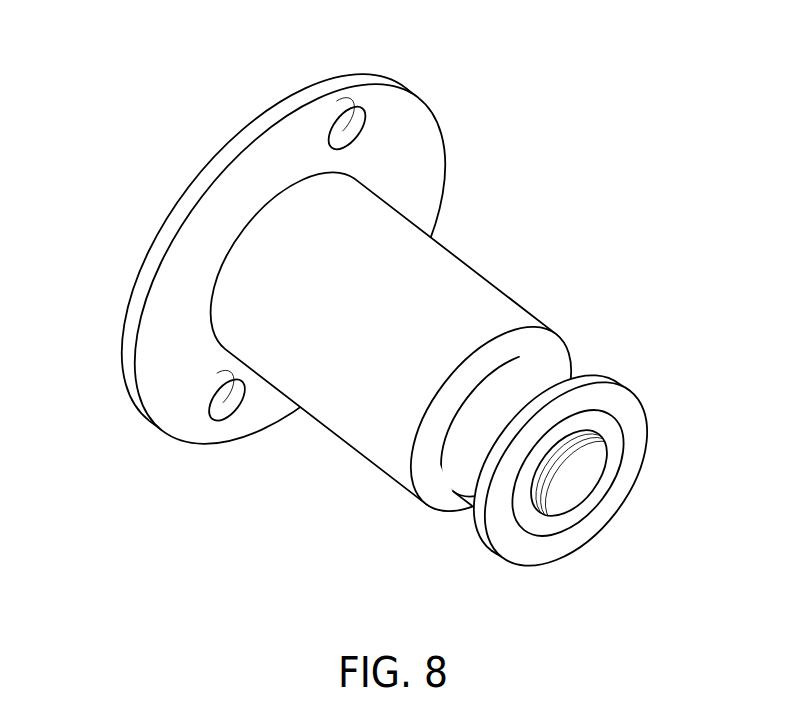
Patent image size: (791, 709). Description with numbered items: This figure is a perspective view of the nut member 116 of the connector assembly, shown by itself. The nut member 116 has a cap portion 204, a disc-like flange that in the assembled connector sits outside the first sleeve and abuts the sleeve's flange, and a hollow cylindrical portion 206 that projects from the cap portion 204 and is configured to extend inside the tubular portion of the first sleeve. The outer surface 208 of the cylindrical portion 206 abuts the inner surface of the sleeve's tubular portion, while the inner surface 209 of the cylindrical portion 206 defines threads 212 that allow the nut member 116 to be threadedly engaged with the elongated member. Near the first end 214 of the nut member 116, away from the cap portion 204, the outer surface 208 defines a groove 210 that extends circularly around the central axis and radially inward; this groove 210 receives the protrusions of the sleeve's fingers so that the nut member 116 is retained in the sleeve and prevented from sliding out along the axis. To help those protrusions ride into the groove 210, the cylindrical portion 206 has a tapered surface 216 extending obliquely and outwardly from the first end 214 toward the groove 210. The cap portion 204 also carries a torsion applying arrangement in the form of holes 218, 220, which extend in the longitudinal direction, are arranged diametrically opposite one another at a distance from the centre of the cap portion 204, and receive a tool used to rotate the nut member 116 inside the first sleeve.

The nut member 116 is at (397, 324).
The cap portion 204 is at (290, 256).
The hollow cylindrical portion 206 is at (407, 355).
The outer surface 208 is at (394, 327).
The inner surface 209 is at (563, 493).
The groove 210 is at (601, 466).
The threads 212 is at (588, 473).
The first end 214 is at (540, 548).
The tapered surface 216 is at (617, 398).
The hole 218 is at (355, 131).
The hole 220 is at (232, 403).